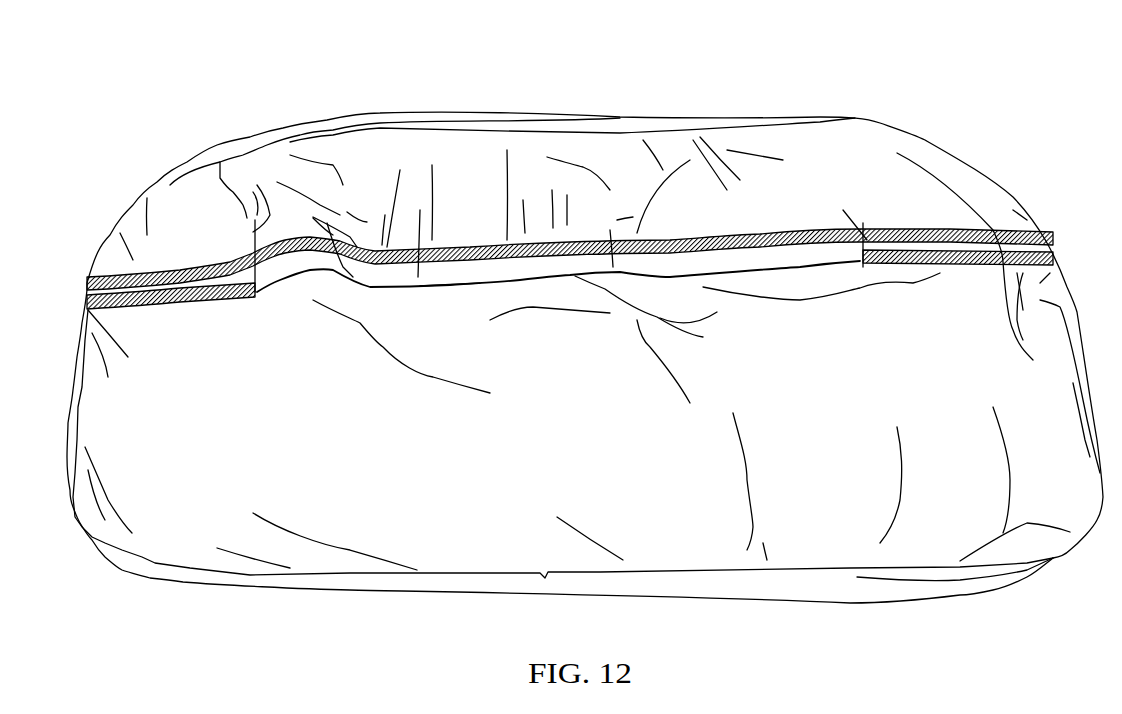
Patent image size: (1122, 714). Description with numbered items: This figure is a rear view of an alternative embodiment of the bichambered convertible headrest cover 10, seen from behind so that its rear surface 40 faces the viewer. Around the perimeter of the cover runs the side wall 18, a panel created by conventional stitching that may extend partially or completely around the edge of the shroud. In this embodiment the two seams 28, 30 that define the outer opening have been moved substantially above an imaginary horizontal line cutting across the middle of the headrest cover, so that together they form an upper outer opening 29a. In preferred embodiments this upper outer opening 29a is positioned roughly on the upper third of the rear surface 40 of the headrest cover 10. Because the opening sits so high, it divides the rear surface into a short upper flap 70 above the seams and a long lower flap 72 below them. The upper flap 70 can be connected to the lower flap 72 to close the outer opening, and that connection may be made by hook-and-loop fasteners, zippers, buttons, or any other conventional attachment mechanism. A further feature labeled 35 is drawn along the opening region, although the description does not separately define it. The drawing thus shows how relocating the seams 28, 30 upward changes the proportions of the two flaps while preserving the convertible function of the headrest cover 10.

The headrest cover 10 is at (466, 77).
The side wall 18 is at (833, 599).
The seam 28 is at (193, 265).
The upper outer opening 29a is at (292, 279).
The seam 30 is at (187, 310).
The seam 35 is at (456, 277).
The rear surface 40 is at (785, 212).
The upper flap 70 is at (583, 180).
The lower flap 72 is at (717, 312).